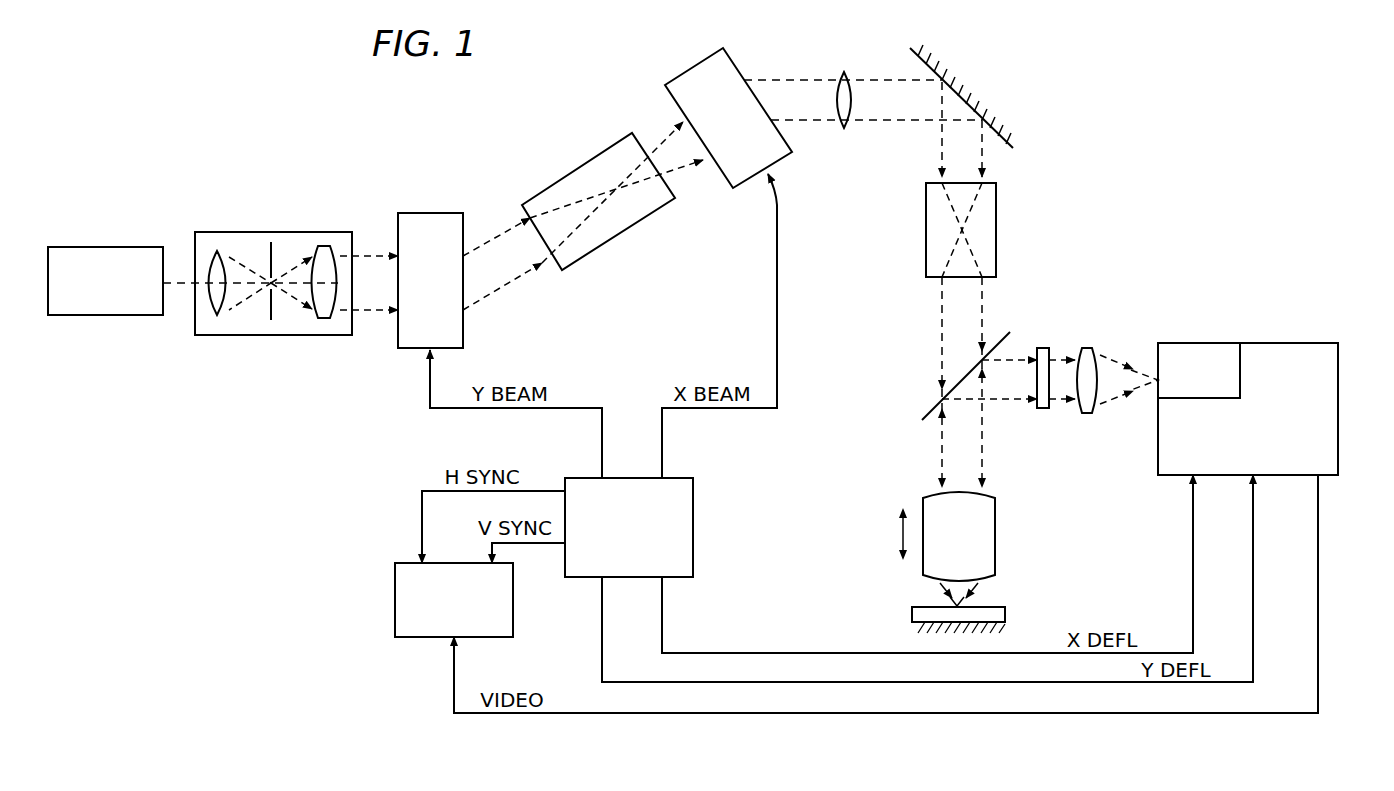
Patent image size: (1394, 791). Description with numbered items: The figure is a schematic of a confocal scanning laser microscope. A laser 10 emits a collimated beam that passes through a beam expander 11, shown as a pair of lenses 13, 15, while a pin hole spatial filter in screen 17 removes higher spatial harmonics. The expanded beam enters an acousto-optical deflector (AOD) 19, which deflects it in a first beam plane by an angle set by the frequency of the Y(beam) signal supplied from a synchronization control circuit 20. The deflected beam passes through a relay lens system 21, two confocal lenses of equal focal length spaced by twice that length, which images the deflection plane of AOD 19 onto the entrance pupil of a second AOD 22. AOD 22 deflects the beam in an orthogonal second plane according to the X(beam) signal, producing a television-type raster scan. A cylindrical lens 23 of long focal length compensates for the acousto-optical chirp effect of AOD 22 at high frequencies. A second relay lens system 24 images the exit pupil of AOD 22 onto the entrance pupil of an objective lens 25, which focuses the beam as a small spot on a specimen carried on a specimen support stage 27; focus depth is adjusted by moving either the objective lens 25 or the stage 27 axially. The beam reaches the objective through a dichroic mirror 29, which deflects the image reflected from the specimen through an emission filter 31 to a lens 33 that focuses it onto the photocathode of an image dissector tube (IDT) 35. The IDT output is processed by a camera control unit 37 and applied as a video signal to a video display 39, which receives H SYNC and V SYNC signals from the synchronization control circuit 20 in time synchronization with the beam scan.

The laser 10 is at (102, 315).
The beam expander 11 is at (300, 232).
The lens 13 is at (208, 306).
The lens 15 is at (333, 318).
The pin hole spatial filter in screen 17 is at (274, 315).
The acousto-optical deflector (AOD) 19 is at (437, 213).
The synchronization control circuit 20 is at (693, 518).
The relay lens system 21 is at (562, 178).
The second AOD 22 is at (690, 69).
The cylindrical lens 23 is at (856, 110).
The second relay lens system 24 is at (996, 228).
The objective lens 25 is at (995, 540).
The specimen support stage 27 is at (912, 613).
The dichroic mirror 29 is at (928, 410).
The emission filter 31 is at (1043, 410).
The lens 33 is at (1093, 352).
The image dissector tube (IDT) 35 is at (1200, 347).
The camera control unit 37 is at (1338, 456).
The video display 39 is at (395, 608).